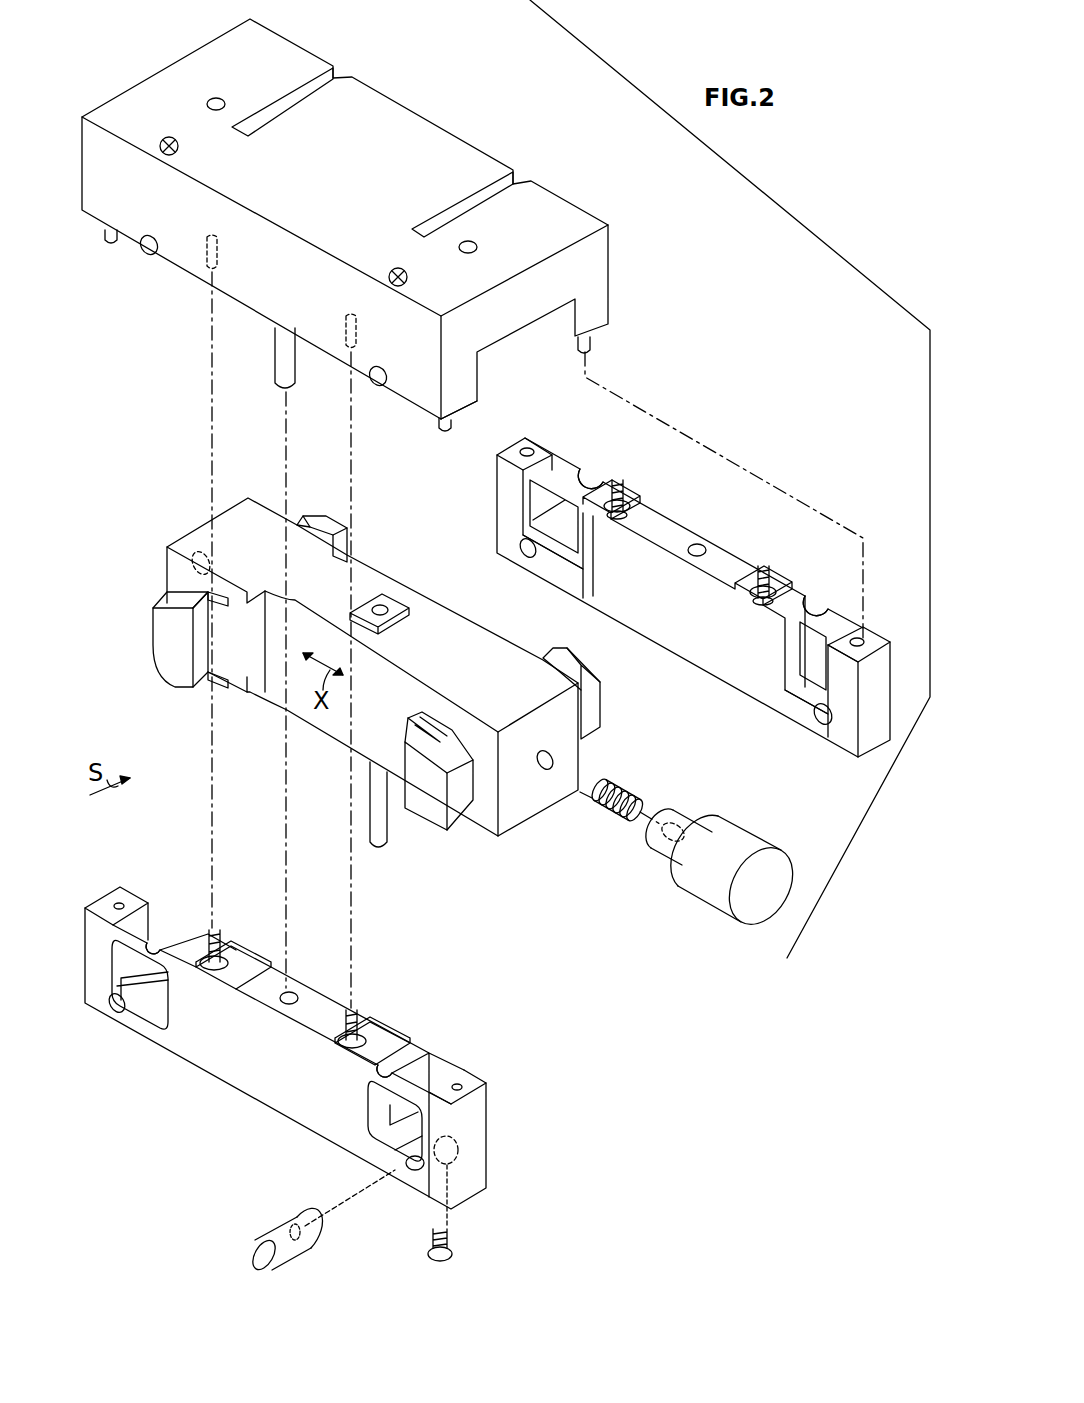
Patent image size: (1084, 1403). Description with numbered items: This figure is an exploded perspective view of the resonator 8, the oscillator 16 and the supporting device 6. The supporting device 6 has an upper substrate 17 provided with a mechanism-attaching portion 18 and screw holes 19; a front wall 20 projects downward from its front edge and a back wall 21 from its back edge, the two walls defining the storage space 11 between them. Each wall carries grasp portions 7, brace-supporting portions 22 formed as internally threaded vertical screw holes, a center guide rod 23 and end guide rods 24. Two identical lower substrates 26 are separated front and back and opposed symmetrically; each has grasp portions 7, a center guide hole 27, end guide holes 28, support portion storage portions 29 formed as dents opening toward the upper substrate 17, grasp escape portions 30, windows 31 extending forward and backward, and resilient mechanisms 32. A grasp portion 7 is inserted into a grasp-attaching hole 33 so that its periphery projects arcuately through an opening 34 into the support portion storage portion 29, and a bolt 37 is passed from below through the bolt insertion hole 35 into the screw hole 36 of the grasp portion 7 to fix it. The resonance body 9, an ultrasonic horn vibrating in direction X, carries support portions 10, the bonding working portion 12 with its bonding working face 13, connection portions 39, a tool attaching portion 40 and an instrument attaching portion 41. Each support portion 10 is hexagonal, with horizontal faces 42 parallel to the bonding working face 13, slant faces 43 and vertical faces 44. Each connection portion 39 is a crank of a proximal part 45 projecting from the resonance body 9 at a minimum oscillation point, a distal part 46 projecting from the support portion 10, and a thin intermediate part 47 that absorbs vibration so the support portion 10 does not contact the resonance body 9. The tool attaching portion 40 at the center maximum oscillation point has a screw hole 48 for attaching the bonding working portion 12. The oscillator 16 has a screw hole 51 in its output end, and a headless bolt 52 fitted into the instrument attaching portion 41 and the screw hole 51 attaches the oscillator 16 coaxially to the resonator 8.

The supporting device 6 is at (303, 47).
The grasp portion 7 is at (147, 256).
The resonator 8 is at (249, 497).
The resonance body 9 is at (196, 553).
The support portion 10 is at (348, 545).
The storage space 11 is at (552, 376).
The bonding working portion 12 is at (370, 828).
The bonding working face 13 is at (382, 852).
The oscillator 16 is at (712, 898).
The upper substrate 17 is at (420, 114).
The mechanism-attaching portion 18 is at (333, 75).
The screw hole 19 is at (212, 98).
The front wall 20 is at (468, 398).
The back wall 21 is at (608, 290).
The brace-supporting portion 22 is at (212, 262).
The center guide rod 23 is at (275, 366).
The end guide rod 24 is at (110, 245).
The lower substrate 26 is at (690, 512).
The center guide hole 27 is at (704, 548).
The end guide hole 28 is at (530, 452).
The support portion storage portion 29 is at (588, 576).
The grasp escape portion 30 is at (595, 478).
The window 31 is at (570, 470).
The resilient mechanism 32 is at (624, 484).
The grasp-attaching hole 33 is at (415, 1178).
The opening 34 is at (400, 1163).
The bolt insertion hole 35 is at (458, 1156).
The screw hole 36 is at (292, 1250).
The bolt 37 is at (445, 1262).
The connection portion 39 is at (232, 694).
The tool attaching portion 40 is at (412, 597).
The instrument attaching portion 41 is at (188, 545).
The horizontal face 42 is at (160, 615).
The slant face 43 is at (160, 596).
The vertical face 44 is at (160, 600).
The proximal part 45 is at (425, 697).
The distal part 46 is at (470, 720).
The intermediate part 47 is at (440, 710).
The screw hole 48 is at (388, 594).
The screw hole 51 is at (660, 852).
The headless bolt 52 is at (618, 812).